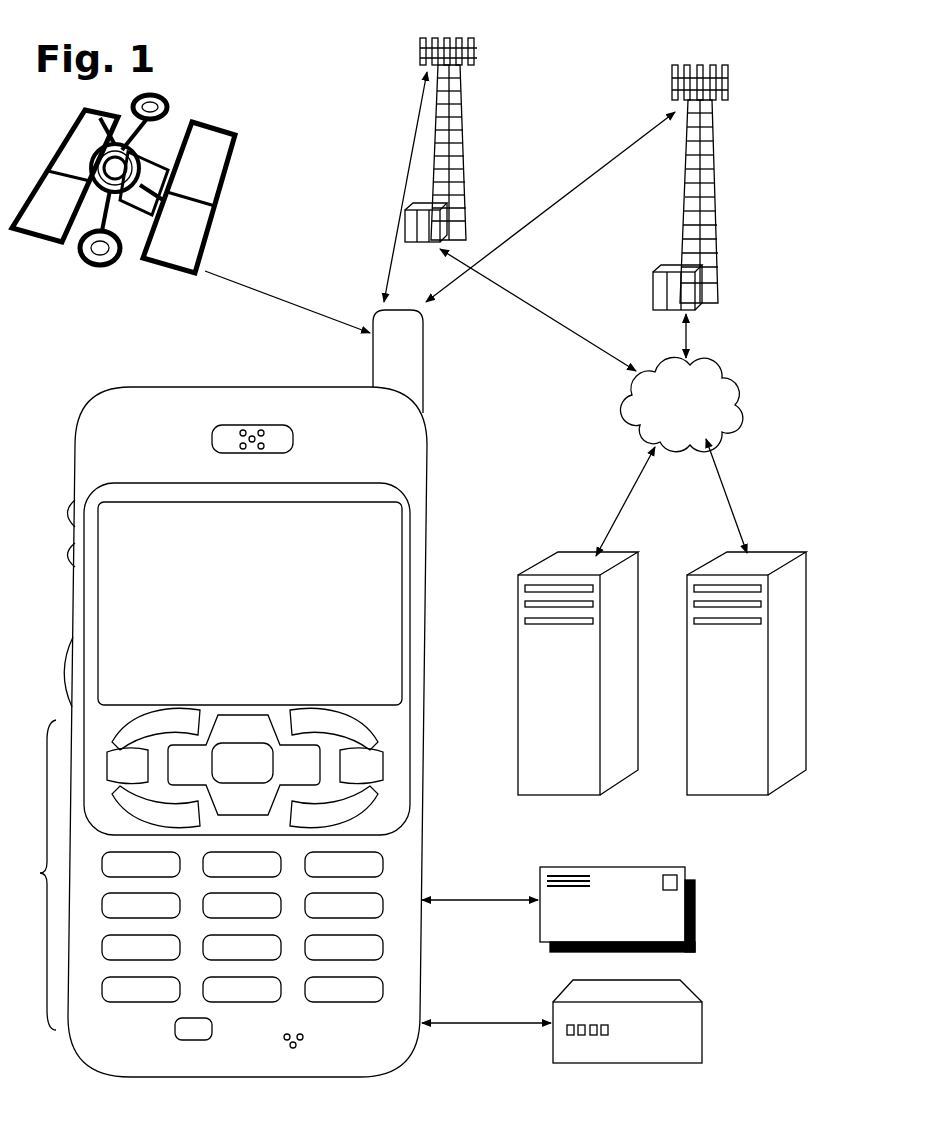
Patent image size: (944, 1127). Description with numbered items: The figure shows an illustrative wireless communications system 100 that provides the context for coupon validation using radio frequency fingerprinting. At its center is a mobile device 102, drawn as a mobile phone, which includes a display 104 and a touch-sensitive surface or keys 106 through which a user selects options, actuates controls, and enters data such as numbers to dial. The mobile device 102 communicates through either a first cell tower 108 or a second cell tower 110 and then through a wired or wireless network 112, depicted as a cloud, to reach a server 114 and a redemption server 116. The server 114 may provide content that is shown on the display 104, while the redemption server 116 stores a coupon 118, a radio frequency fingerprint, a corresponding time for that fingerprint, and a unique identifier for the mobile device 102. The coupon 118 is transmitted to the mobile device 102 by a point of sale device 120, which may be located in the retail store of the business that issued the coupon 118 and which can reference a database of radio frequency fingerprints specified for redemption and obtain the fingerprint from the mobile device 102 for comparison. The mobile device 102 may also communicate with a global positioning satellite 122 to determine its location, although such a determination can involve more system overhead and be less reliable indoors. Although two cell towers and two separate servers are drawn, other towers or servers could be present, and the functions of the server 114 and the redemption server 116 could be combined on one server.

The wireless communications system 100 is at (476, 519).
The mobile device 102 is at (102, 1077).
The display 104 is at (393, 475).
The keys 106 is at (194, 875).
The first cell tower 108 is at (435, 150).
The second cell tower 110 is at (683, 200).
The network 112 is at (640, 434).
The server 114 is at (535, 736).
The redemption server 116 is at (690, 796).
The coupon 118 is at (550, 945).
The point of sale device 120 is at (604, 1063).
The global positioning satellite 122 is at (215, 239).